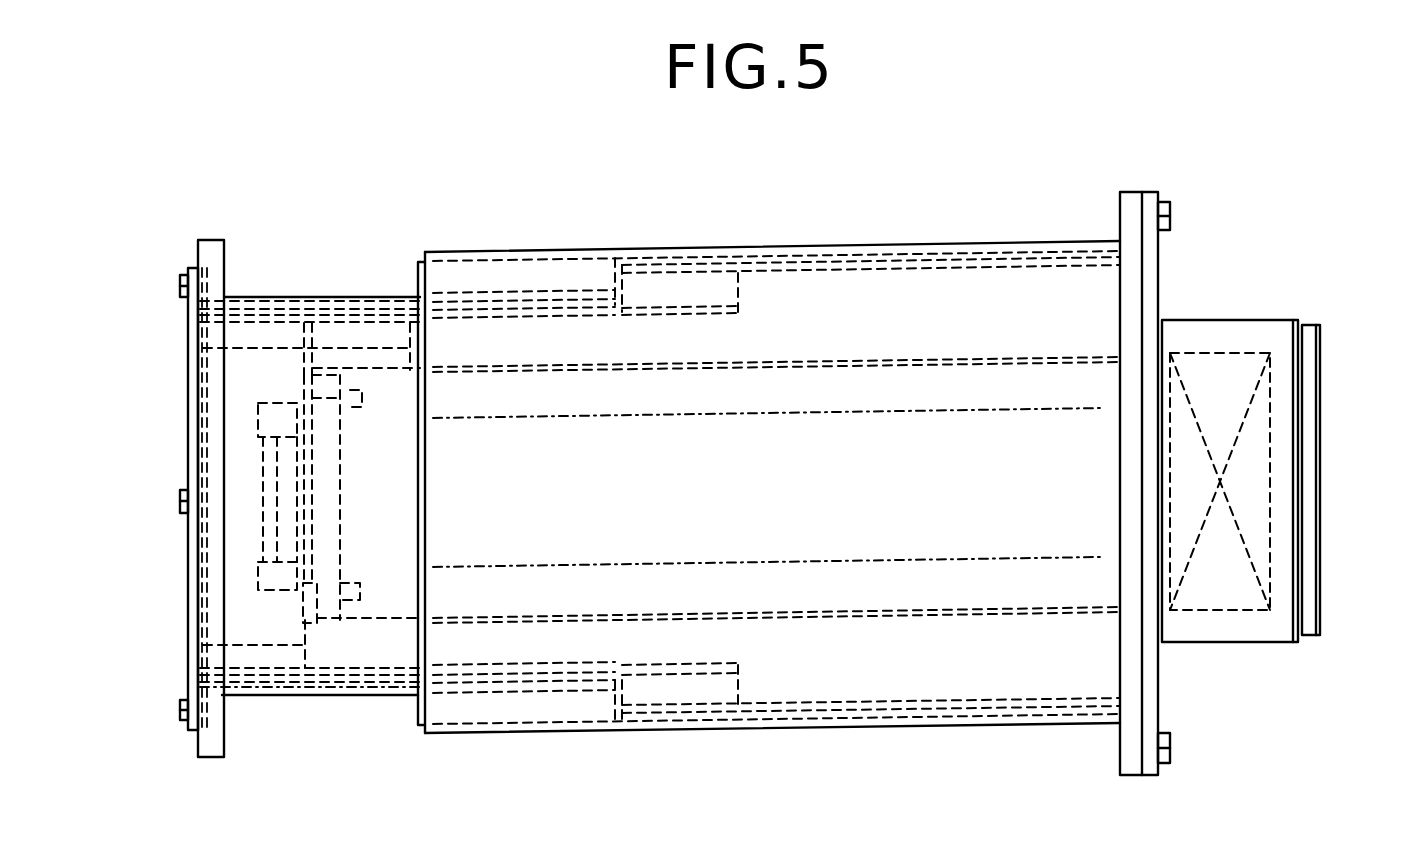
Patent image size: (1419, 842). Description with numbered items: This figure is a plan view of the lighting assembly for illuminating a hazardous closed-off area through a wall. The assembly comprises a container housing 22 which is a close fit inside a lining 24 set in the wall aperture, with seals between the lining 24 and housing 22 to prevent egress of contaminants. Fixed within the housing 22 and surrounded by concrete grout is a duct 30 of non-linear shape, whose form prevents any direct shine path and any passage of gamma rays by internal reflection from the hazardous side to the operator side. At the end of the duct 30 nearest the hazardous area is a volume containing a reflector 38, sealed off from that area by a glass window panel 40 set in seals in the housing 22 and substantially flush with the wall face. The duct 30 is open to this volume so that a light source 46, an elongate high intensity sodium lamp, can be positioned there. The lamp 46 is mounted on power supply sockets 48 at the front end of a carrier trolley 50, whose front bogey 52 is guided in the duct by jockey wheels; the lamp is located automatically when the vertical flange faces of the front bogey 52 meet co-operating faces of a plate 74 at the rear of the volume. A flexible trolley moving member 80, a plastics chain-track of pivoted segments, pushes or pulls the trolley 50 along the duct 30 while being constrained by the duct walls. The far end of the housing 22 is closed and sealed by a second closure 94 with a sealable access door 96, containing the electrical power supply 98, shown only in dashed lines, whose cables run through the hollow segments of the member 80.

The container housing 22 is at (693, 274).
The lining 24 is at (540, 251).
The duct 30 is at (994, 358).
The reflector 38 is at (252, 645).
The glass window panel 40 is at (195, 542).
The light source 46 is at (260, 468).
The power supply sockets 48 is at (258, 425).
The carrier trolley 50 is at (340, 372).
The front bogey 52 is at (312, 578).
The plate 74 is at (315, 354).
The flexible trolley moving member 80 is at (866, 416).
The second closure 94 is at (1213, 318).
The access door 96 is at (1322, 417).
The electrical power supply 98 is at (1268, 475).